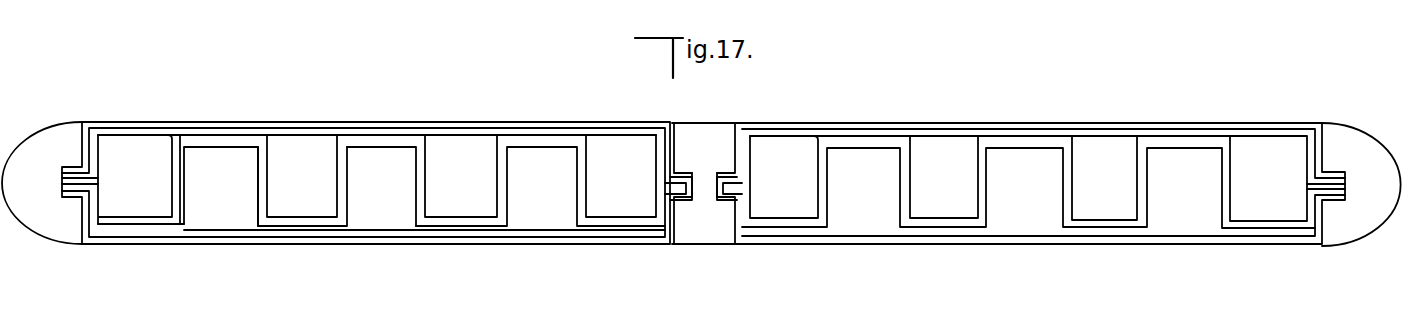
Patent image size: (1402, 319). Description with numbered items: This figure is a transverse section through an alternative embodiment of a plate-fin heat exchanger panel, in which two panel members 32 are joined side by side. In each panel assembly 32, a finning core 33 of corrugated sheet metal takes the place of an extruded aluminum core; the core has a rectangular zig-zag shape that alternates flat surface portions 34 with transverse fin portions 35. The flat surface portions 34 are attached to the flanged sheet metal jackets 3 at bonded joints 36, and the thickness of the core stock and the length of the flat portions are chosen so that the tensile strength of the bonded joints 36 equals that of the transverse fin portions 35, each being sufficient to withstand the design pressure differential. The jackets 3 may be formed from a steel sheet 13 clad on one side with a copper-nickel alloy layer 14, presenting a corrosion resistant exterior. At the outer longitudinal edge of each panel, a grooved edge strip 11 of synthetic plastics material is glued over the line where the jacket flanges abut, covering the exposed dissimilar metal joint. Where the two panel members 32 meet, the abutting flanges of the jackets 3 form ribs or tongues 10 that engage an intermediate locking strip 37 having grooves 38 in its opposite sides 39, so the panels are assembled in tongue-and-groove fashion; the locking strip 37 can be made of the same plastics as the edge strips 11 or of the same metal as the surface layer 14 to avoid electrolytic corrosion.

The sheet metal jacket 3 is at (447, 125).
The rib or tongue 10 is at (678, 183).
The grooved edge strip 11 is at (62, 136).
The steel sheet 13 is at (138, 130).
The copper-nickel alloy layer 14 is at (190, 123).
The panel assembly 32 is at (703, 161).
The finning core 33 is at (201, 191).
The flat surface portion 34 is at (352, 143).
The transverse fin portion 35 is at (263, 174).
The bonded joint 36 is at (385, 134).
The locking strip 37 is at (693, 167).
The groove 38 is at (719, 197).
The opposite side 39 is at (672, 124).